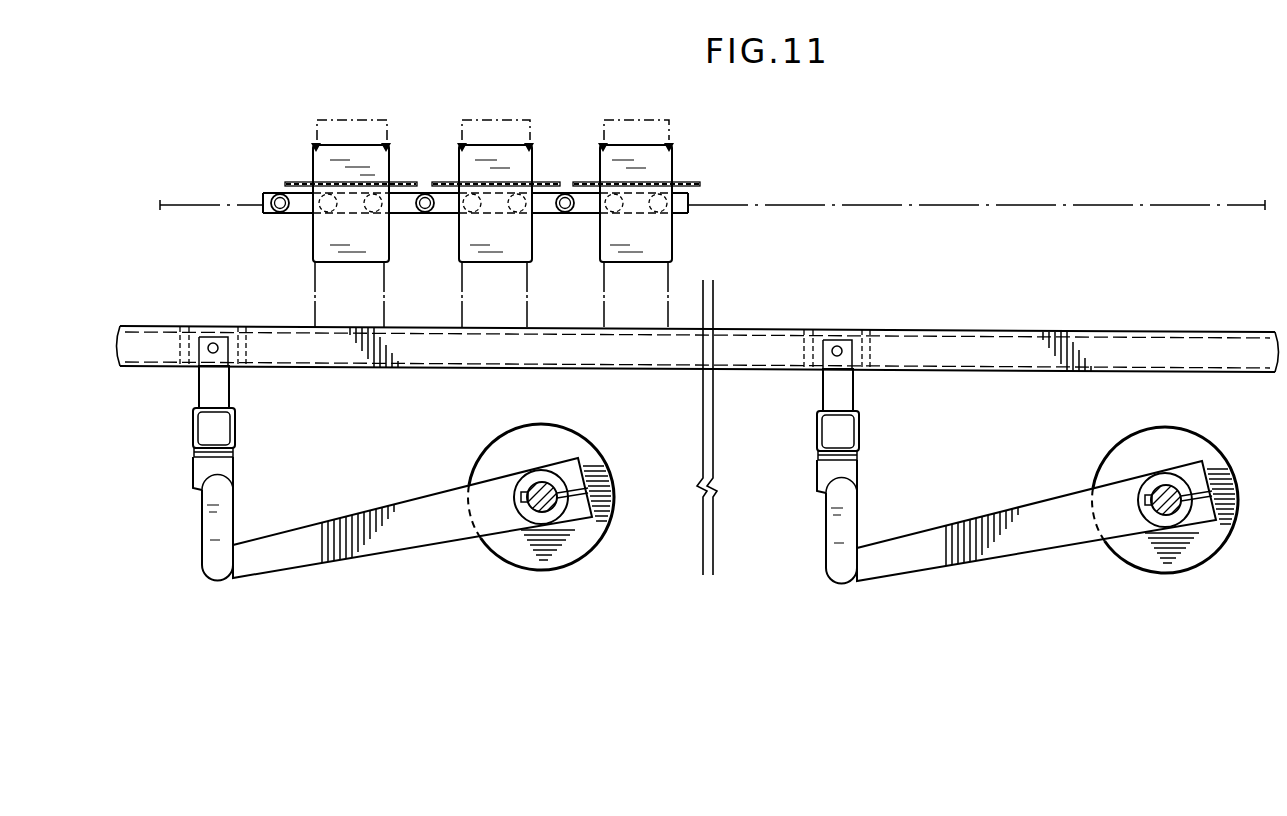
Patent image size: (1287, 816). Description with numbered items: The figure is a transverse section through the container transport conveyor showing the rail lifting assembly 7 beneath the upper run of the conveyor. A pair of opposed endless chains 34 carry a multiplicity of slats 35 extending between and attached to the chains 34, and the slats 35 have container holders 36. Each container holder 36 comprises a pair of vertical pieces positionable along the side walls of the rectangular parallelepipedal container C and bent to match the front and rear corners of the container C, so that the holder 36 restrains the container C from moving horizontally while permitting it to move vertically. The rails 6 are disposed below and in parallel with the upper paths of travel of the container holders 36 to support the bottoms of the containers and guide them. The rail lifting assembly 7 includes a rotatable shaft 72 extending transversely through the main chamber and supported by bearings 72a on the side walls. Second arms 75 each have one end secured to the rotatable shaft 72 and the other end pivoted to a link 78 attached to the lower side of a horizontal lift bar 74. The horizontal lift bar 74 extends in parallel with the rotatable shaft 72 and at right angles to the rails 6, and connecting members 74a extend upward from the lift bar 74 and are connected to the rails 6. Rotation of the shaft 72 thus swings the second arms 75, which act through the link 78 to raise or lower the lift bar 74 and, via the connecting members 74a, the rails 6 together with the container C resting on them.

The rails 6 is at (962, 345).
The rail lifting assembly 7 is at (451, 562).
The endless chains 34 is at (266, 193).
The slats 35 is at (408, 182).
The container holders 36 is at (368, 150).
The rotatable shaft 72 is at (539, 512).
The bearings 72a is at (574, 552).
The horizontal lift bar 74 is at (236, 426).
The connecting members 74a is at (210, 387).
The second arms 75 is at (405, 548).
The link 78 is at (240, 510).
The container C is at (350, 118).